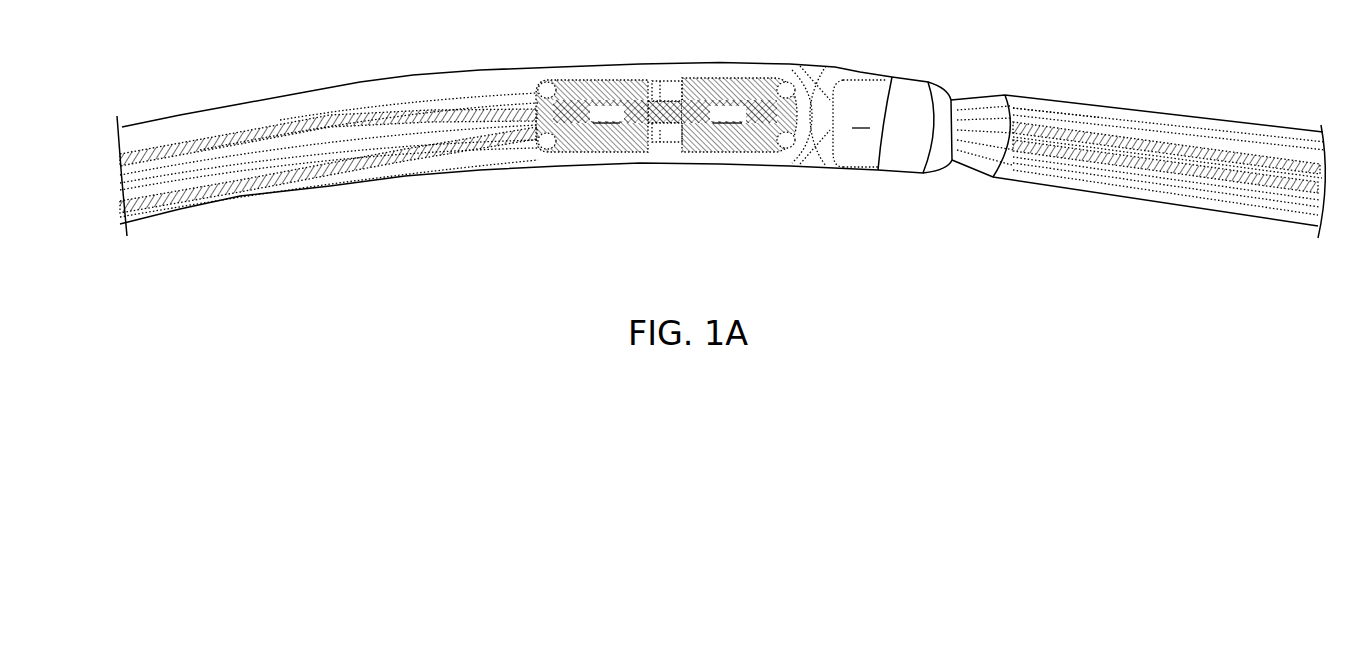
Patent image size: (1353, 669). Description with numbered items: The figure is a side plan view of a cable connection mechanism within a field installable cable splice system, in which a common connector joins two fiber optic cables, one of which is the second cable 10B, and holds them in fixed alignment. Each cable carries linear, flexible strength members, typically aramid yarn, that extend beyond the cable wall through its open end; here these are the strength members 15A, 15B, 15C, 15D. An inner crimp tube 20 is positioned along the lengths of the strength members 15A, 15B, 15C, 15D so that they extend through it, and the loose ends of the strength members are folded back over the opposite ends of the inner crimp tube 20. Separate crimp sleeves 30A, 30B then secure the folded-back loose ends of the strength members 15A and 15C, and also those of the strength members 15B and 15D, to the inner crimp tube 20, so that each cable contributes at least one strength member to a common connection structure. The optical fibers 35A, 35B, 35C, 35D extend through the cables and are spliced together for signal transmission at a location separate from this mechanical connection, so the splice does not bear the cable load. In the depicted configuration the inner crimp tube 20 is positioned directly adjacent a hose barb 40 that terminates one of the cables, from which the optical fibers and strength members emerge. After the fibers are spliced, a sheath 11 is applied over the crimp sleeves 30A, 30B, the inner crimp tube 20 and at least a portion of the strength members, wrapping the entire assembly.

The sheath 11 is at (412, 75).
The second cable 10B is at (1157, 113).
The strength member 15A is at (470, 145).
The strength member 15B is at (460, 102).
The strength member 15C is at (553, 90).
The strength member 15D is at (1050, 165).
The inner crimp tube 20 is at (663, 77).
The crimp sleeve 30A is at (592, 116).
The crimp sleeve 30B is at (747, 116).
The optical fiber 35A is at (157, 208).
The optical fiber 35B is at (152, 157).
The optical fiber 35C is at (1197, 153).
The optical fiber 35D is at (1210, 175).
The hose barb 40 is at (876, 119).